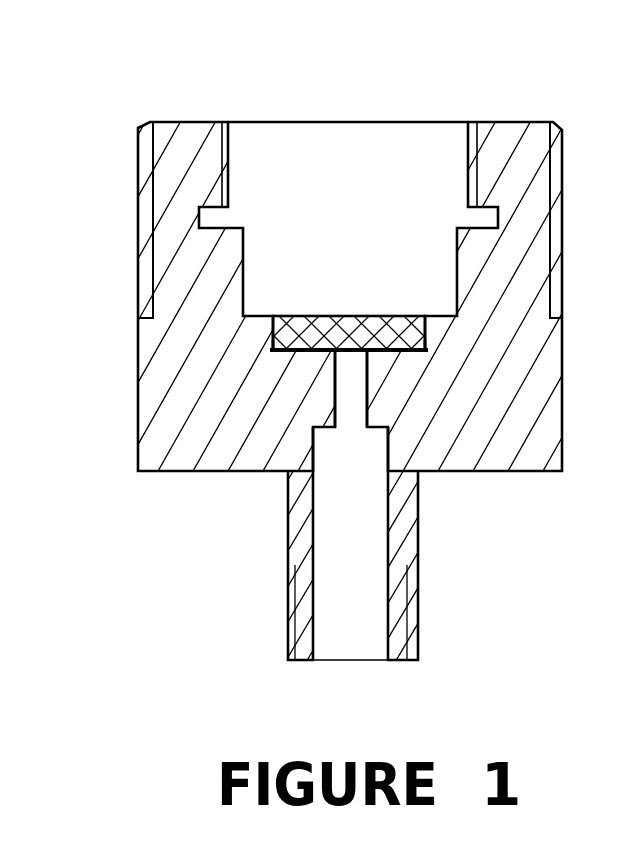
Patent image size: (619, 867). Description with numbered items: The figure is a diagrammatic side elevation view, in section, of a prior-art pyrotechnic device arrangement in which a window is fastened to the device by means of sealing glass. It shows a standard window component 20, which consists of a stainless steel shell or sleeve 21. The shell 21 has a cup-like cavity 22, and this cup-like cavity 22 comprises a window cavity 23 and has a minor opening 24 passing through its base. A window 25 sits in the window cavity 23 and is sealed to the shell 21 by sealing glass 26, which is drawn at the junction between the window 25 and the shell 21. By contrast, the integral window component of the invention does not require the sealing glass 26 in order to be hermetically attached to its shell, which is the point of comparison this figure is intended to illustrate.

The window component 20 is at (128, 135).
The shell 21 is at (140, 362).
The cup-like cavity 22 is at (230, 145).
The window cavity 23 is at (310, 427).
The minor opening 24 is at (349, 436).
The window 25 is at (378, 355).
The sealing glass 26 is at (270, 340).